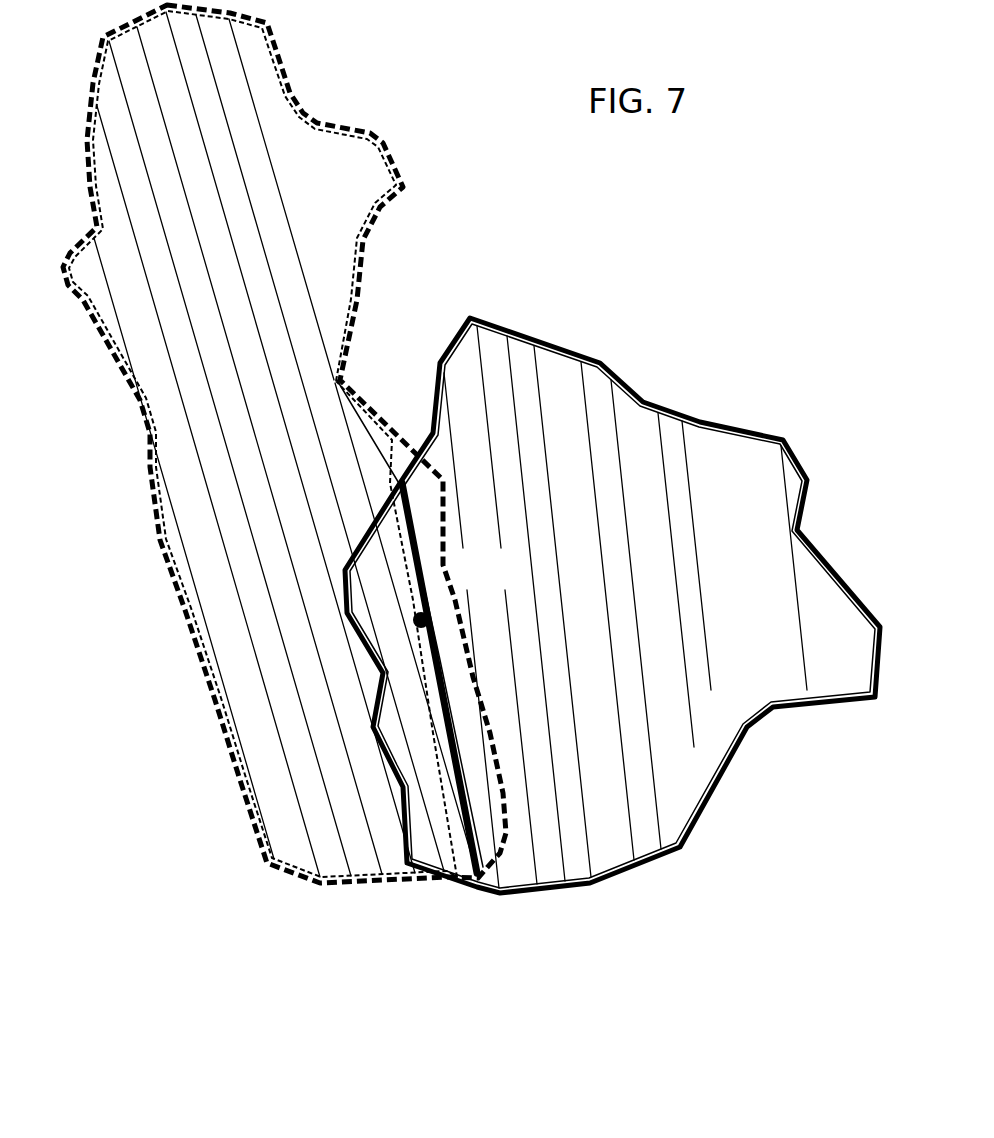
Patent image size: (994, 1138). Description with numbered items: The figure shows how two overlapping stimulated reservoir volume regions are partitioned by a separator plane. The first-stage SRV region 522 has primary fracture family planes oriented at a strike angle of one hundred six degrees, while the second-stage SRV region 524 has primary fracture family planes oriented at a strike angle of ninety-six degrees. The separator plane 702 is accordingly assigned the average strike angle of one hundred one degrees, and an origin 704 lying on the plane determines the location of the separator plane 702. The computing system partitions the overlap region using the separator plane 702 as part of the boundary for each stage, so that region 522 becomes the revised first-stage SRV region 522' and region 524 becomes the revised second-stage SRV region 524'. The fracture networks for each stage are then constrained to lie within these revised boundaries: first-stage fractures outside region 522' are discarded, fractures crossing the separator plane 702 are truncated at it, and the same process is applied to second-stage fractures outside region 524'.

The Stage 1 SRV region 522 is at (284, 444).
The revised Stage 1 SRV region 522' is at (276, 444).
The Stage 2 SRV region 524 is at (612, 598).
The revised Stage 2 SRV region 524' is at (612, 606).
The separator plane 702 is at (458, 878).
The origin 704 is at (430, 613).